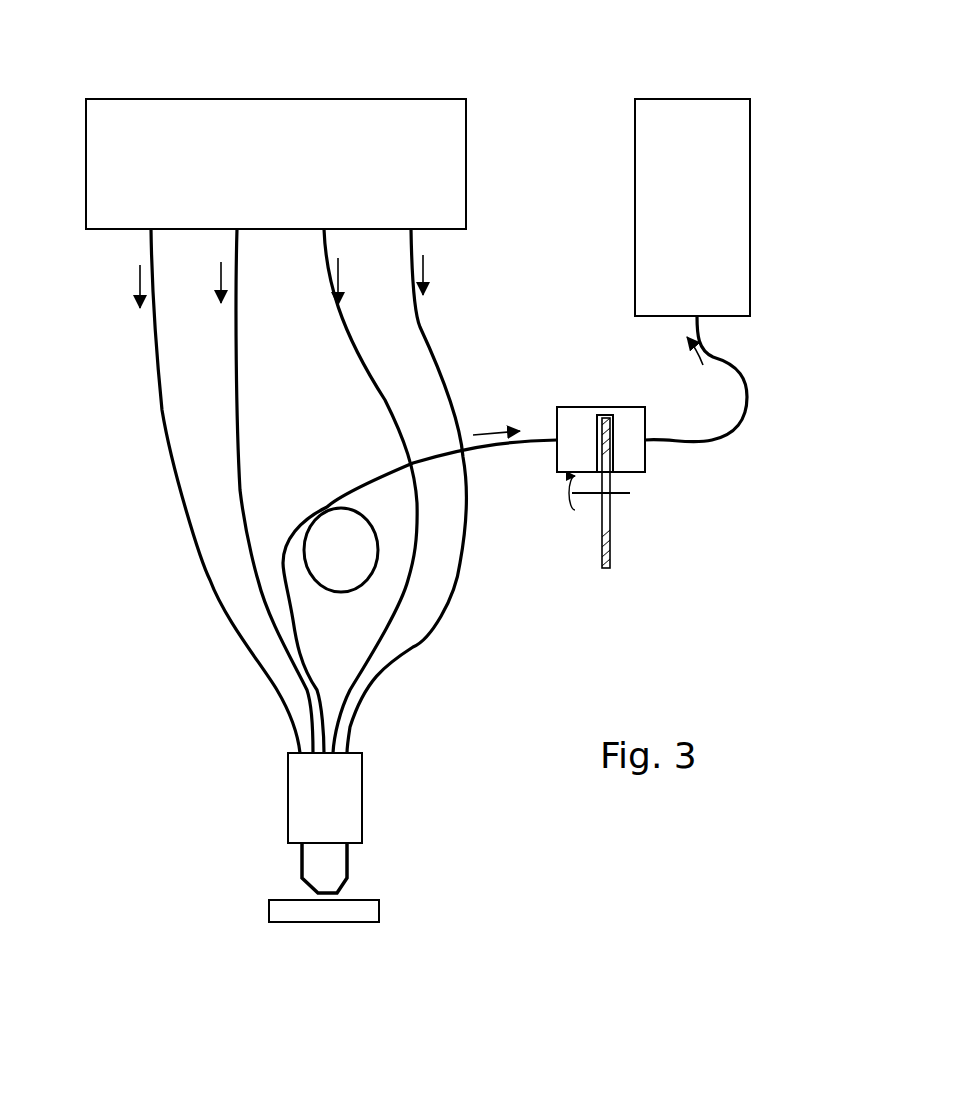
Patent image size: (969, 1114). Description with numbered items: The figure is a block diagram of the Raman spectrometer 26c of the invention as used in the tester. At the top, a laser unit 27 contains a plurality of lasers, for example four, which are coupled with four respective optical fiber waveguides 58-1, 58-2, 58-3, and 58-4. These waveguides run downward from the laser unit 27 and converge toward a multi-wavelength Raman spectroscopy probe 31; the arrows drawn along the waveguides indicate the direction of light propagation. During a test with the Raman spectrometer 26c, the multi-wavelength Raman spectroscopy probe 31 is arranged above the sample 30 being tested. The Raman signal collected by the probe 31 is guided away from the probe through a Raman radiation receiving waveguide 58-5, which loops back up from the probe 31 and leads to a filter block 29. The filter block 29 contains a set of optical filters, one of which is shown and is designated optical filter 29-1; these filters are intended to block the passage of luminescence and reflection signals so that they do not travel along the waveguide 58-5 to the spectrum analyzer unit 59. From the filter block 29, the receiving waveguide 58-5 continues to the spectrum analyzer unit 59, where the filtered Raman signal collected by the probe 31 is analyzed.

The Raman spectrometer 26c is at (116, 70).
The laser unit 27 is at (290, 125).
The optical fiber waveguide 58-1 is at (162, 412).
The optical fiber waveguide 58-2 is at (238, 497).
The optical fiber waveguide 58-3 is at (390, 407).
The optical fiber waveguide 58-4 is at (420, 323).
The Raman radiation receiving waveguide 58-5 is at (510, 443).
The filter block 29 is at (645, 455).
The optical filter 29-1 is at (612, 527).
The spectrum analyzer unit 59 is at (720, 275).
The multi-wavelength Raman spectroscopy probe 31 is at (292, 862).
The sample 30 is at (343, 922).